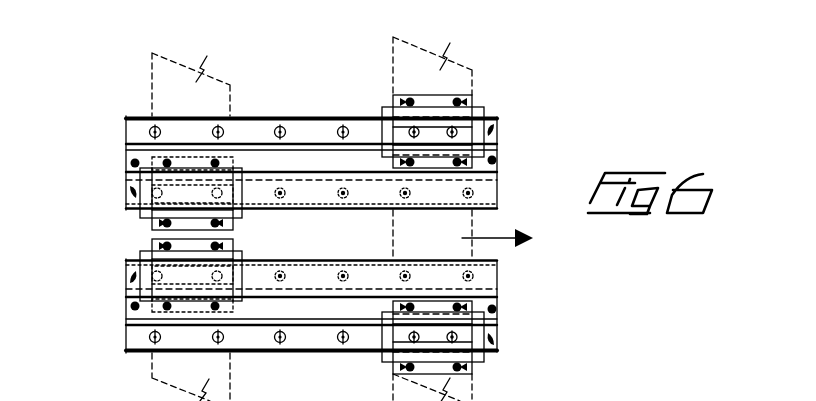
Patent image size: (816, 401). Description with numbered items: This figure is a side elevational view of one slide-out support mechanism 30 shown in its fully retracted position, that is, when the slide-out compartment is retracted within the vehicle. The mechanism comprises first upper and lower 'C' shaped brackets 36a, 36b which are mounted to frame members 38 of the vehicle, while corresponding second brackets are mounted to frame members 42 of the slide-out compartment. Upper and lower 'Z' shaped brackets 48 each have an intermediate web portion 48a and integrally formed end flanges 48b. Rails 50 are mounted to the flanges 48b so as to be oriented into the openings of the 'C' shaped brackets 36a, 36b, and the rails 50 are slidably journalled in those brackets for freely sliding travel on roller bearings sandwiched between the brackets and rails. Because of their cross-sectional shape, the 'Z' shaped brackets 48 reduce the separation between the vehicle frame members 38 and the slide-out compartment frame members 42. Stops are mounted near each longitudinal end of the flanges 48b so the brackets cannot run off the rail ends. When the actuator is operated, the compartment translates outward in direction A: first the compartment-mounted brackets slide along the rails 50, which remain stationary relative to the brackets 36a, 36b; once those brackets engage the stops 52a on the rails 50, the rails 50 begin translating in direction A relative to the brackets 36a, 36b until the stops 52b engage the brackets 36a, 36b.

The slide-out support mechanism 30 is at (498, 75).
The first upper 'C' shaped bracket 36a is at (457, 115).
The first lower 'C' shaped bracket 36b is at (462, 355).
The frame member of vehicle 38 is at (448, 78).
The frame member of slide-out compartment 42 is at (173, 83).
The 'Z' shaped bracket 48 is at (165, 213).
The intermediate web portion 48a is at (158, 218).
The end flange 48b is at (155, 247).
The rail 50 is at (140, 135).
The stop 52a is at (497, 155).
The stop 52b is at (128, 163).